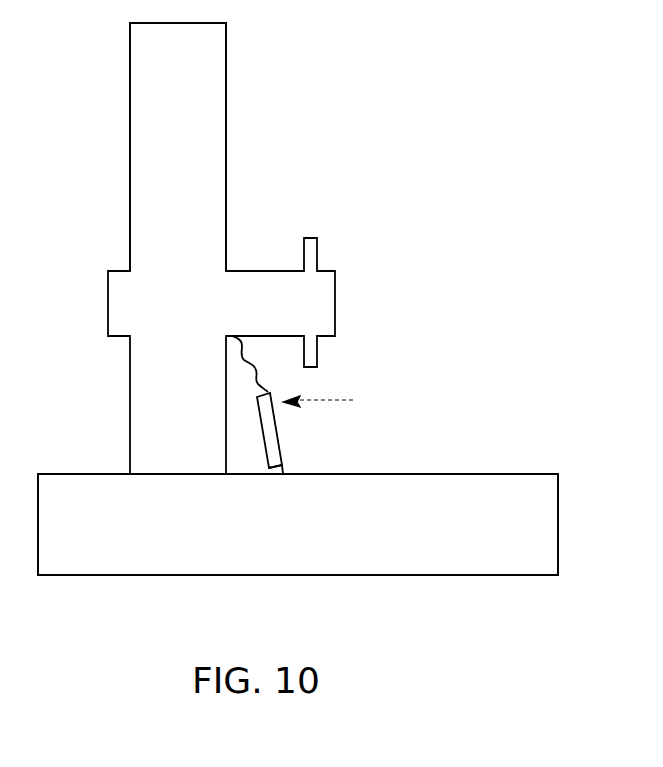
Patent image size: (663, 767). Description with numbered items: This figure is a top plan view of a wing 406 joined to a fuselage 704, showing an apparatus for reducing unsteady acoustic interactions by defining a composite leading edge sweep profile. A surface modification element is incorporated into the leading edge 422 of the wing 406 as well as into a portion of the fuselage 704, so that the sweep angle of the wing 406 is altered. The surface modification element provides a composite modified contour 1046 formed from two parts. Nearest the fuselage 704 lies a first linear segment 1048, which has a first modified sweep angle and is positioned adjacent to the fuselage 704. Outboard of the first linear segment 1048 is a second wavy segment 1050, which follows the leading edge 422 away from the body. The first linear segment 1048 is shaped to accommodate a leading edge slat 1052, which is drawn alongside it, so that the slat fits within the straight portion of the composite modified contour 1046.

The wing 406 is at (130, 67).
The leading edge 422 is at (226, 178).
The fuselage 704 is at (100, 575).
The second wavy segment 1050 is at (255, 372).
The leading edge slat 1052 is at (275, 428).
The first linear segment 1048 is at (282, 468).
The composite modified contour 1046 is at (345, 401).